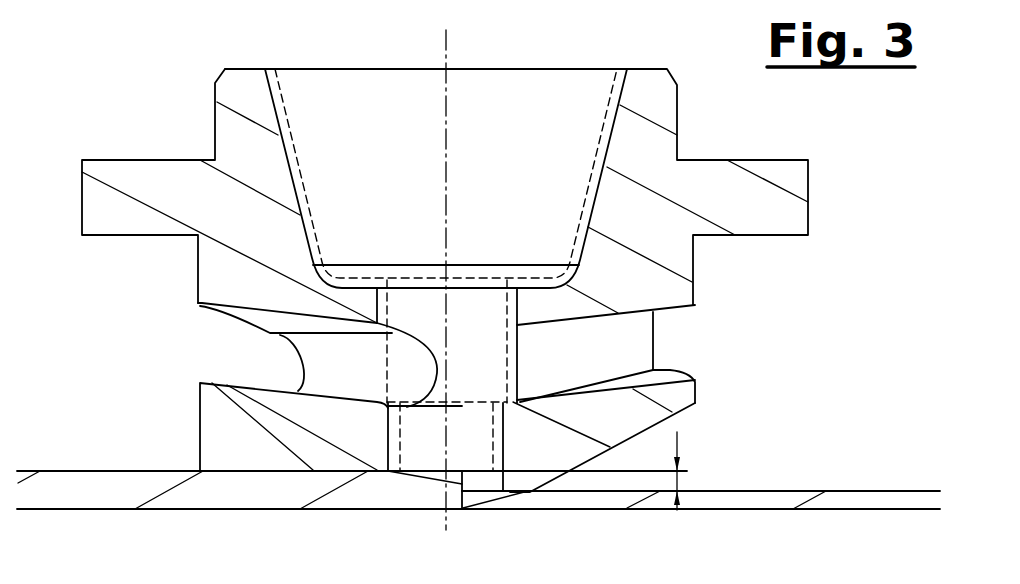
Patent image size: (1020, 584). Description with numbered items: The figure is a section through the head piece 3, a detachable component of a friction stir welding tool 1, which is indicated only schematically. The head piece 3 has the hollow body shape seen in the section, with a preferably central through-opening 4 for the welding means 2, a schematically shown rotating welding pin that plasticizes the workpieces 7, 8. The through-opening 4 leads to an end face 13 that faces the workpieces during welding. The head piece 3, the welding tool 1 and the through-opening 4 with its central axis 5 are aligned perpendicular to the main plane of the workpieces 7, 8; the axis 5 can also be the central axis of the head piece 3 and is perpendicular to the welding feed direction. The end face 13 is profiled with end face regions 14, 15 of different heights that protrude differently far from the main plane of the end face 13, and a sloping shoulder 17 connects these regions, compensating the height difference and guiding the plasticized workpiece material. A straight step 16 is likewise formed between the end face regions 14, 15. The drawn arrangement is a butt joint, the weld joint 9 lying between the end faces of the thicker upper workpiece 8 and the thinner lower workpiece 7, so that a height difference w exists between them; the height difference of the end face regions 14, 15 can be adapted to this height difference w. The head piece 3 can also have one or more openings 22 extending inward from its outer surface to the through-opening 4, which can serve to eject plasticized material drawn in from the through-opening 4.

The welding tool 1 is at (153, 112).
The welding means 2 is at (493, 457).
The head piece 3 is at (773, 202).
The through-opening 4 is at (420, 317).
The central axis 5 is at (446, 153).
The workpiece 7 is at (843, 503).
The workpiece 8 is at (88, 492).
The weld joint 9 is at (466, 512).
The end face 13 is at (360, 487).
The end face region 14 is at (525, 492).
The end face region 15 is at (275, 471).
The straight step 16 is at (462, 477).
The sloping shoulder 17 is at (403, 475).
The opening 22 is at (260, 353).
The height difference w is at (693, 471).